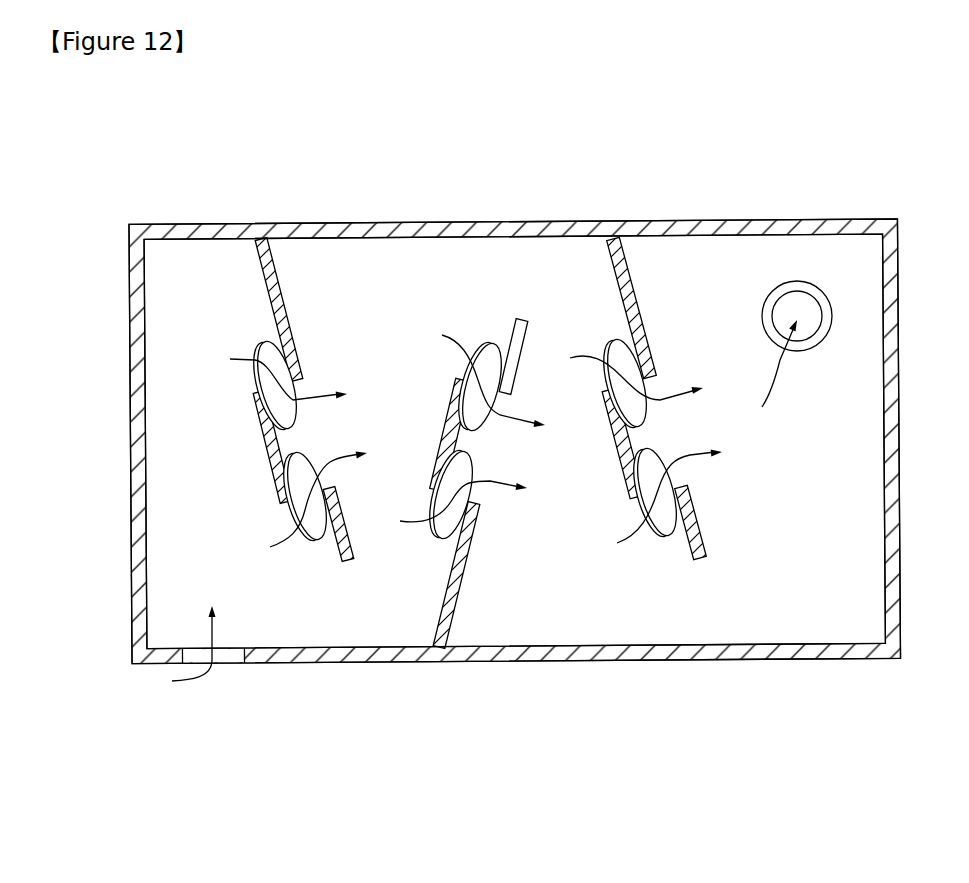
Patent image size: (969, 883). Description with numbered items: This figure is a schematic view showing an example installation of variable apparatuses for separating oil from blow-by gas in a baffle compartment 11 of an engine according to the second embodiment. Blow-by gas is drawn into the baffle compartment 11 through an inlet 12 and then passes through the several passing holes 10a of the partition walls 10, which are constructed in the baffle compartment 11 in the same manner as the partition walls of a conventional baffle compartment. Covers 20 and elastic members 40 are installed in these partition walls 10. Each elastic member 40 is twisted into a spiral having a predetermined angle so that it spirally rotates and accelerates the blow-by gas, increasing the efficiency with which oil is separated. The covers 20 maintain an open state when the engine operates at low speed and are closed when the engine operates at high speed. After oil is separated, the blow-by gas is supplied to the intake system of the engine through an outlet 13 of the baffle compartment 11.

The partition wall 10 is at (267, 283).
The passing hole 10a is at (322, 441).
The baffle compartment 11 is at (492, 226).
The inlet 12 is at (232, 660).
The outlet 13 is at (812, 308).
The cover 20 is at (265, 439).
The elastic member 40 is at (263, 344).